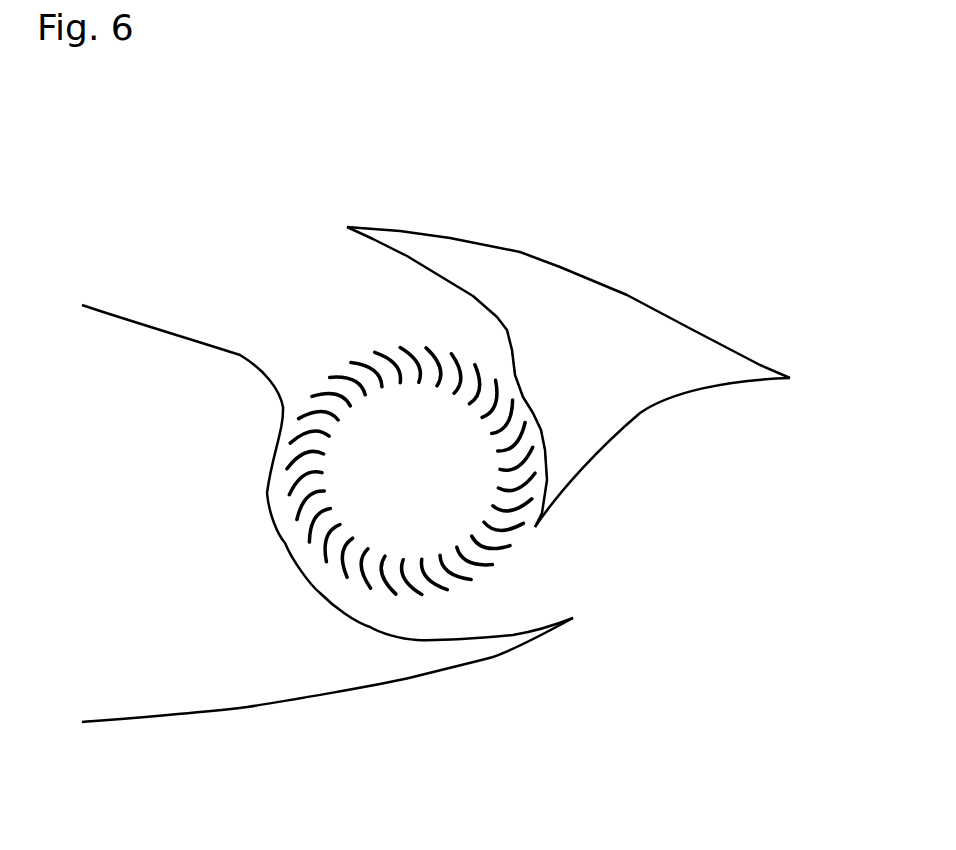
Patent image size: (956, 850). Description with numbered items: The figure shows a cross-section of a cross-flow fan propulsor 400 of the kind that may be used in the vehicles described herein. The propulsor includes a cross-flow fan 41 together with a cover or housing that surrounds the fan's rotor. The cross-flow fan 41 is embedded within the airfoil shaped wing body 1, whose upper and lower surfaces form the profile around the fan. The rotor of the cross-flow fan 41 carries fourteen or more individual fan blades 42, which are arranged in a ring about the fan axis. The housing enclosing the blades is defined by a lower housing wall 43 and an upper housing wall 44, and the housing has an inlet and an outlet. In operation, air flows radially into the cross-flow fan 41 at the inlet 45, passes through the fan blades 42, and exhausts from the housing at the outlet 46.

The airfoil shaped wing body 1 is at (127, 685).
The cross-flow fan propulsor 400 is at (724, 213).
The cross-flow fan 41 is at (385, 478).
The fan blades 42 is at (290, 440).
The lower housing wall 43 is at (433, 642).
The upper housing wall 44 is at (531, 410).
The inlet 45 is at (262, 288).
The outlet 46 is at (662, 563).